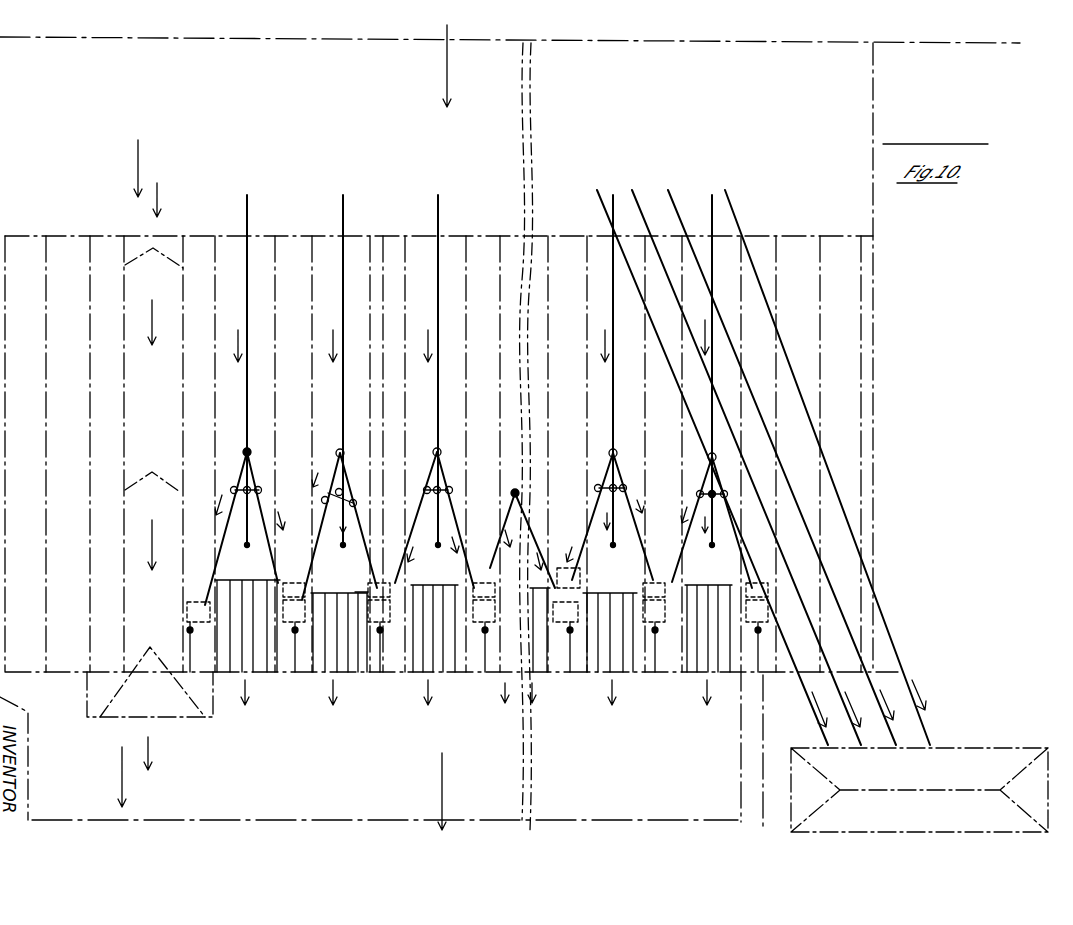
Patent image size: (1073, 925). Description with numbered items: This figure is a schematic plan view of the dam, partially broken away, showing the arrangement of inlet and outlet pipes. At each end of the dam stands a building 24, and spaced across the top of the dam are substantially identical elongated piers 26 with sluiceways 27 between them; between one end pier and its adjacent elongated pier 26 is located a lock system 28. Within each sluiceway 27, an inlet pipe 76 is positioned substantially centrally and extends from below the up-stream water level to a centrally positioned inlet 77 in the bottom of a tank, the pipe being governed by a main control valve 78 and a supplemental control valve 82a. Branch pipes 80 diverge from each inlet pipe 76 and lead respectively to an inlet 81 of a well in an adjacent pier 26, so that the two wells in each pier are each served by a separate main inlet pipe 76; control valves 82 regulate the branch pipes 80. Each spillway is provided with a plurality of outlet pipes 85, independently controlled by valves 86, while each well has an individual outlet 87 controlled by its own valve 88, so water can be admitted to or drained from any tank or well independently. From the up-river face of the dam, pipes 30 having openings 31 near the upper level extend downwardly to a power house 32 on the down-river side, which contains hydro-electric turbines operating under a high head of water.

The building 24 is at (57, 236).
The lock system 28 is at (145, 255).
The sluiceway 27 is at (319, 236).
The elongated pier 26 is at (383, 236).
The inlet pipe 76 is at (247, 248).
The main control valve 78 is at (249, 450).
The control valve 82 is at (355, 494).
The branch pipe 80 is at (355, 492).
The inlet 81 is at (205, 600).
The supplemental control valve 82a is at (355, 590).
The inlet 77 is at (436, 580).
The valve 88 is at (188, 630).
The valve 86 is at (437, 585).
The outlet pipe 85 is at (347, 680).
The outlet 87 is at (195, 665).
The pipe 30 is at (836, 488).
The opening 31 is at (727, 192).
The power house 32 is at (968, 748).